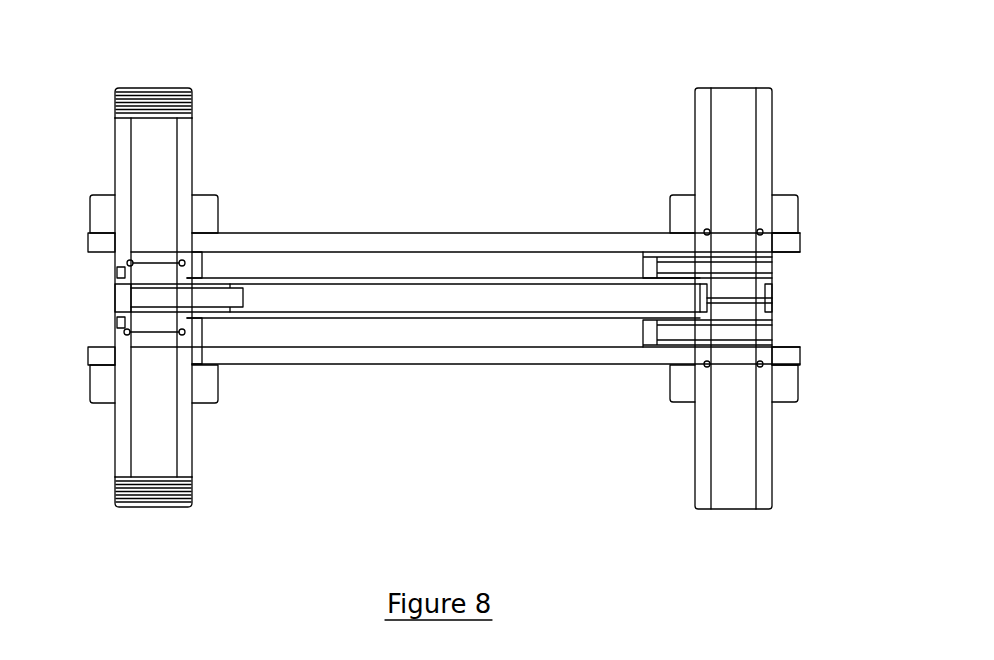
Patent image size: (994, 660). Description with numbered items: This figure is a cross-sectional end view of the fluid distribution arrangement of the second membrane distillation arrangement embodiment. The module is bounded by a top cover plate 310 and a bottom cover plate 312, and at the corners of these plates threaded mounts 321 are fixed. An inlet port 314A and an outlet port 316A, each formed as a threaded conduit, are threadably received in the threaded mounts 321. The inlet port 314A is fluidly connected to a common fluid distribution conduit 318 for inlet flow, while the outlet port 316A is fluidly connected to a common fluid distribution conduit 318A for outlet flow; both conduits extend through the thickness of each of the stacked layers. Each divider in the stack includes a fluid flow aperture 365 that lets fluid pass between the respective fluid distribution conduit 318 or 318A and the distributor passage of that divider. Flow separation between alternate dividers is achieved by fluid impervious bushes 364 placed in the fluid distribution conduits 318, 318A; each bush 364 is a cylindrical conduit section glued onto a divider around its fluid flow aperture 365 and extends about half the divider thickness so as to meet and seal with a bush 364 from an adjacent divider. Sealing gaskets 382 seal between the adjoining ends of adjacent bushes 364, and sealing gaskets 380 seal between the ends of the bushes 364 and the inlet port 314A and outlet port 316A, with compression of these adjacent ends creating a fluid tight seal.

The top cover plate 310 is at (448, 231).
The bottom cover plate 312 is at (525, 366).
The inlet port 314A is at (735, 86).
The outlet port 316A is at (153, 87).
The fluid distribution conduit (inlet) 318 is at (727, 135).
The fluid distribution conduit (outlet) 318A is at (162, 162).
The threaded mount 321 is at (205, 212).
The bush 364 is at (117, 272).
The fluid flow aperture 365 is at (138, 298).
The sealing gasket 380 is at (128, 261).
The sealing gasket 382 is at (762, 300).